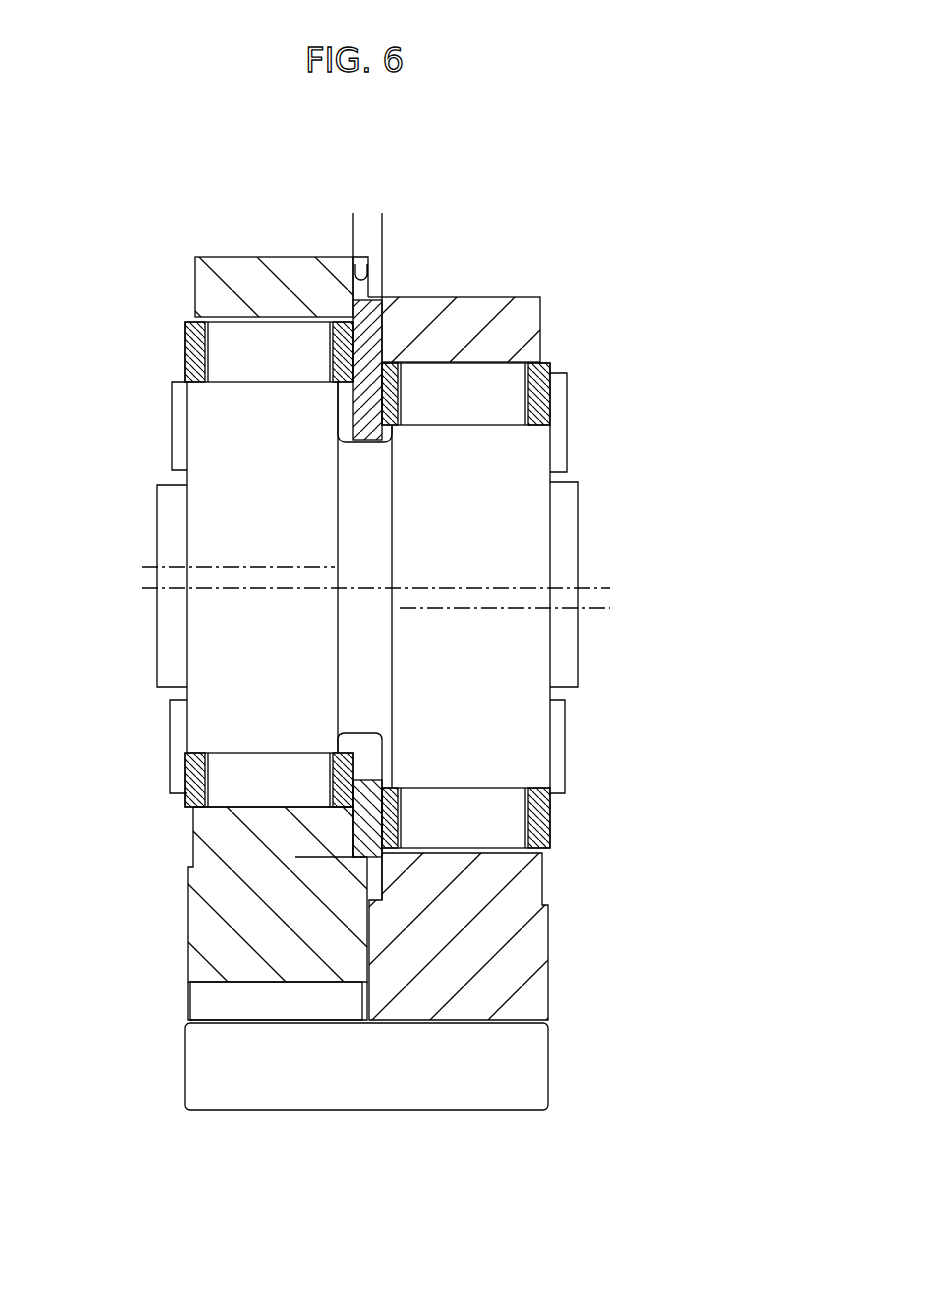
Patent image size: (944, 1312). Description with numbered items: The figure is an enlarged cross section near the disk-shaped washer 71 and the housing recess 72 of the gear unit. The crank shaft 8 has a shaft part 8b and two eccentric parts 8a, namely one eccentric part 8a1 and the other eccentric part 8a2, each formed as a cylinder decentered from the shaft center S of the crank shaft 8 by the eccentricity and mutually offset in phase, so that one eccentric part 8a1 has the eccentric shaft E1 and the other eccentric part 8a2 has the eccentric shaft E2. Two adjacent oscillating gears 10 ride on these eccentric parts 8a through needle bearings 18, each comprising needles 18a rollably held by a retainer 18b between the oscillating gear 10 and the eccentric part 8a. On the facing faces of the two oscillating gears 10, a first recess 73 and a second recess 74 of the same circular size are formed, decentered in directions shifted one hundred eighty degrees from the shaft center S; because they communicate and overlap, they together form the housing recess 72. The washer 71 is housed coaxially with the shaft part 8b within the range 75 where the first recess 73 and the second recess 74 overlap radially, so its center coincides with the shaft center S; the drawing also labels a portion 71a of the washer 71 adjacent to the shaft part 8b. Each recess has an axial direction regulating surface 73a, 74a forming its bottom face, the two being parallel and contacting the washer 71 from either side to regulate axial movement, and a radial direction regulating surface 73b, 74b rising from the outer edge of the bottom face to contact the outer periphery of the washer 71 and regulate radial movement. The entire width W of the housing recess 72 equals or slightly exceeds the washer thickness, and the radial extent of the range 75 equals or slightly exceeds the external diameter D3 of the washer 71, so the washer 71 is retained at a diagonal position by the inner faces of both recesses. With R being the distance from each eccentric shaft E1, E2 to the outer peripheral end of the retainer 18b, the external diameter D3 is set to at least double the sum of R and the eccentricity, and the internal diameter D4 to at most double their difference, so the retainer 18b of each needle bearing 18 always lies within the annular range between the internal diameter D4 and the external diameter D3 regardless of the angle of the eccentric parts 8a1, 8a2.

The crank shaft 8 is at (516, 712).
The eccentric parts 8a is at (362, 583).
The one eccentric part 8a1 is at (203, 633).
The other eccentric part 8a2 is at (520, 569).
The shaft part 8b is at (372, 493).
The oscillating gear 10 is at (255, 963).
The needle bearing 18 is at (353, 629).
The needles 18a is at (225, 800).
The retainer 18b is at (240, 806).
The disk-shaped washer 71 is at (380, 820).
The hub portion of lower housing member 71a is at (372, 790).
The housing recess 72 is at (714, 767).
The first recess 73 is at (390, 784).
The axial direction regulating surface 73a is at (370, 293).
The radial direction regulating surface 73b is at (364, 272).
The second recess 74 is at (375, 865).
The axial direction regulating surface 74a is at (366, 380).
The radial direction regulating surface 74b is at (358, 345).
The range 75 is at (336, 302).
The entire width W is at (325, 228).
The external diameter D3 is at (350, 313).
The internal diameter D4 is at (427, 364).
The distance R is at (213, 484).
The eccentric shaft E1 is at (203, 564).
The eccentric shaft E2 is at (567, 610).
The shaft center S is at (205, 590).